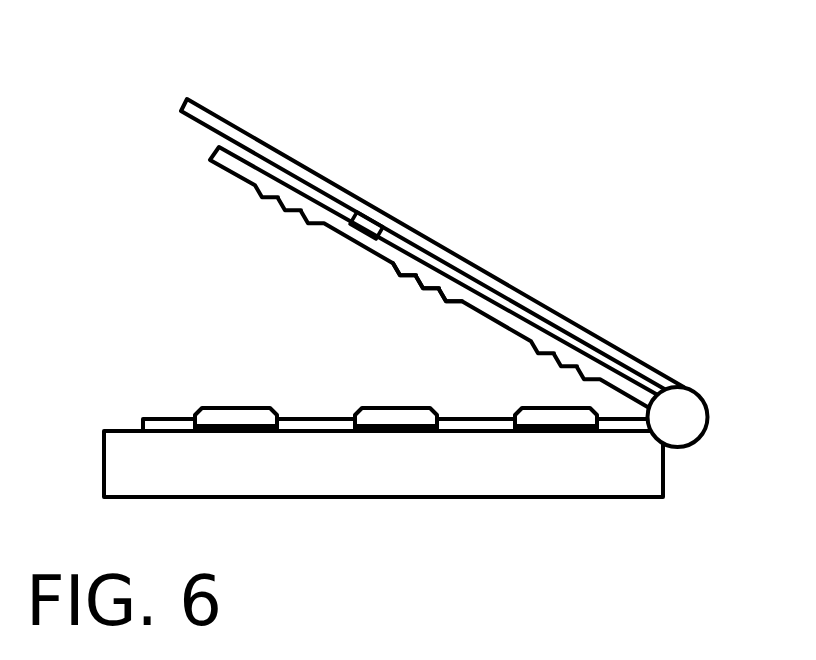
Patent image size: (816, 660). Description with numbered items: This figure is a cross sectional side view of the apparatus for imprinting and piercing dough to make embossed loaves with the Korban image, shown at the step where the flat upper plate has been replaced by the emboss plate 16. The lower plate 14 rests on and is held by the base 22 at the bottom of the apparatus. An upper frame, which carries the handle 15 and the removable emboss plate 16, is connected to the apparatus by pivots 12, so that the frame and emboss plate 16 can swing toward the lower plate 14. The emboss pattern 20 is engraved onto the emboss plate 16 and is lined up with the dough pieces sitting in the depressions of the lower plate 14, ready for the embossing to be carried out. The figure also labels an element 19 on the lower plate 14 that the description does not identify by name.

The pivots 12 is at (678, 417).
The lower plate 14 is at (308, 417).
The handle 15 is at (548, 313).
The emboss plate 16 is at (628, 387).
The contact pad 19 is at (220, 407).
The emboss pattern 20 is at (425, 287).
The base 22 is at (495, 472).